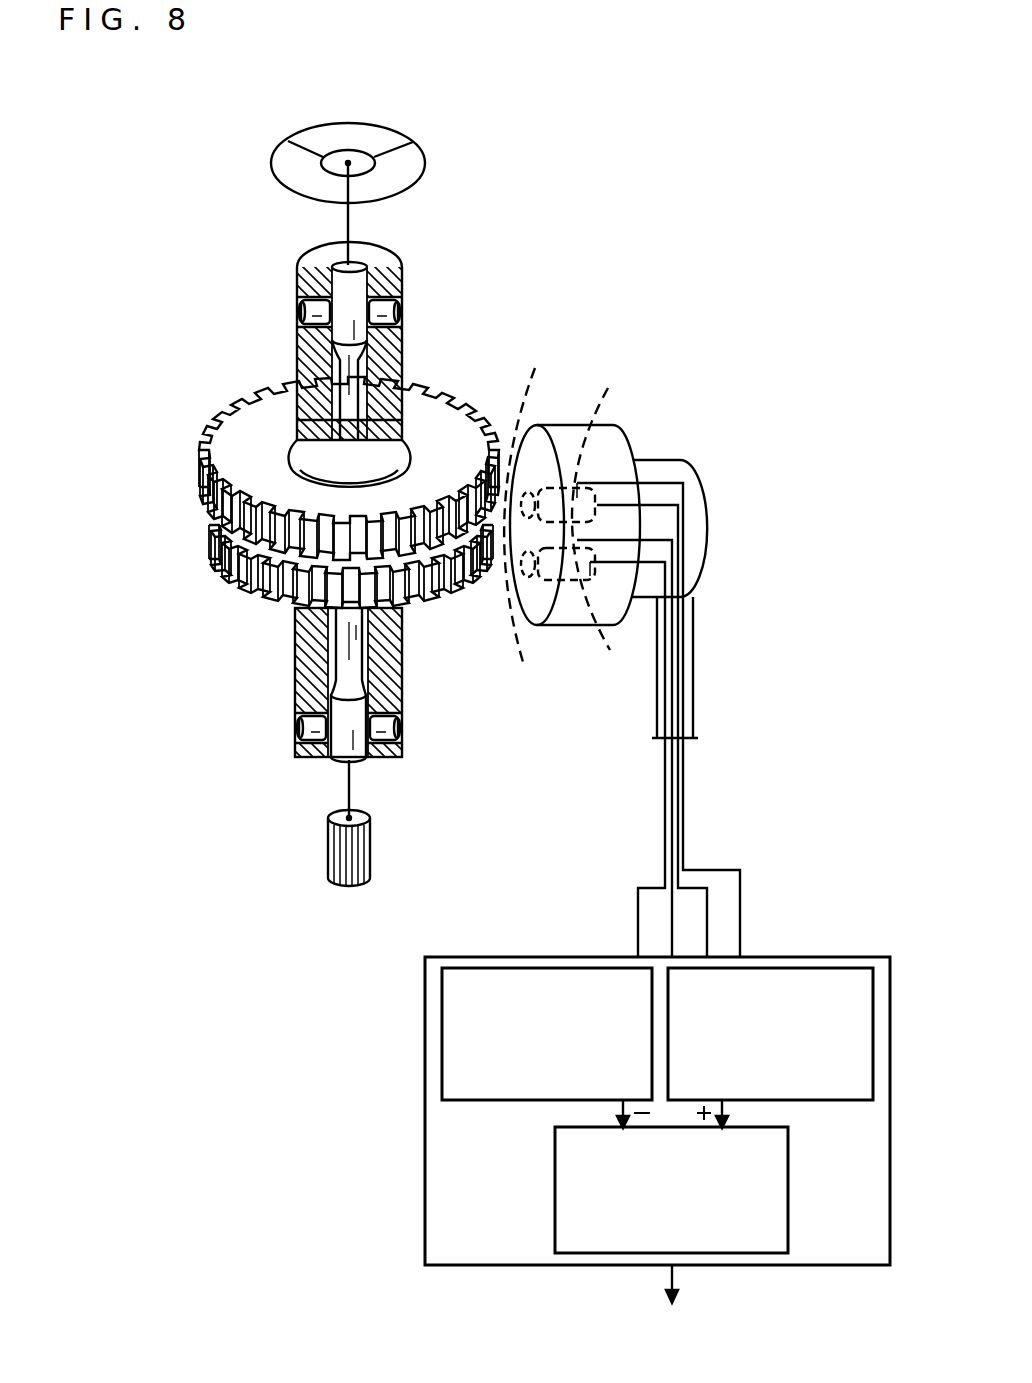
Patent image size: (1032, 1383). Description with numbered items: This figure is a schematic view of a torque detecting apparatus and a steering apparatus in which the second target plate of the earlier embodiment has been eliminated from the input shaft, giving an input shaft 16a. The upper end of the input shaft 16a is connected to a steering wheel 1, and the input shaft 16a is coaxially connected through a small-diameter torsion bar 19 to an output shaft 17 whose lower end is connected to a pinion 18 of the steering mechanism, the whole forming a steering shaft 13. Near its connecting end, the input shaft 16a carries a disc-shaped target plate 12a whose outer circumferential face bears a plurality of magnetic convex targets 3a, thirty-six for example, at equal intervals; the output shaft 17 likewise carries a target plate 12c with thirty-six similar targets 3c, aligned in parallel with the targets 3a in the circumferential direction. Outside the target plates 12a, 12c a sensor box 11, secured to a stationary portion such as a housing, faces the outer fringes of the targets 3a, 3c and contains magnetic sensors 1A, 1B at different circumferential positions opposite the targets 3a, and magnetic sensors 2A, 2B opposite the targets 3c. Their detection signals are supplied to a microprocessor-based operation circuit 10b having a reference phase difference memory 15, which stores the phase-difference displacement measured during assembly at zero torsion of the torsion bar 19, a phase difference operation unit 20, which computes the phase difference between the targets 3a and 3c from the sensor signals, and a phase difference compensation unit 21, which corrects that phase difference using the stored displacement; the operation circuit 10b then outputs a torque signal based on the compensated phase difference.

The steering wheel 1 is at (432, 152).
The steering shaft 13 is at (404, 294).
The input shaft 16a is at (400, 338).
The torsion bar 19 is at (345, 378).
The target plate 12a is at (243, 427).
The targets 3a is at (290, 465).
The targets 3c is at (301, 624).
The target plate 12c is at (267, 590).
The output shaft 17 is at (402, 675).
The pinion 18 is at (372, 838).
The sensor box 11 is at (622, 645).
The magnetic sensor 1A is at (577, 502).
The magnetic sensor 1B is at (536, 498).
The magnetic sensor 2A is at (577, 613).
The magnetic sensor 2B is at (541, 681).
The operation circuit 10b is at (595, 1148).
The reference phase difference memory 15 is at (482, 1100).
The phase difference operation unit 20 is at (840, 1100).
The phase difference compensation unit 21 is at (790, 1207).